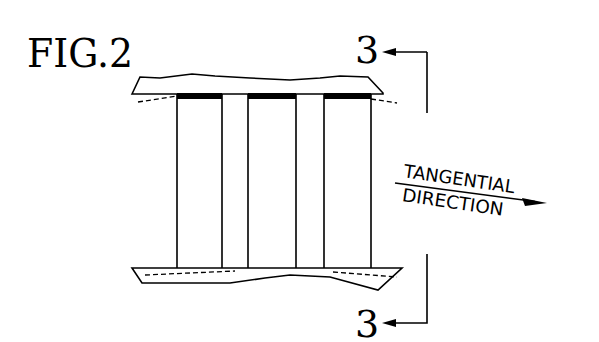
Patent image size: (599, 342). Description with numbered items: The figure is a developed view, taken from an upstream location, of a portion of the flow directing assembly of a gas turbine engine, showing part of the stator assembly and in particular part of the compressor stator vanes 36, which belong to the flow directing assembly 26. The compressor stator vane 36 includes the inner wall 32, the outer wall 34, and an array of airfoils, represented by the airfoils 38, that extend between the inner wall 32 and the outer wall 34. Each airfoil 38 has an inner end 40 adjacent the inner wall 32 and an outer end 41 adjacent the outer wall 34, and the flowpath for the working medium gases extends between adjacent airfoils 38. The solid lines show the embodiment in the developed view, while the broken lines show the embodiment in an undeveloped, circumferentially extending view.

The flow directing assembly 26 is at (143, 150).
The inner wall 32 is at (148, 268).
The outer wall 34 is at (143, 95).
The compressor stator vane 36 is at (162, 168).
The airfoil 38 is at (212, 190).
The inner end 40 is at (272, 259).
The outer end 41 is at (267, 113).